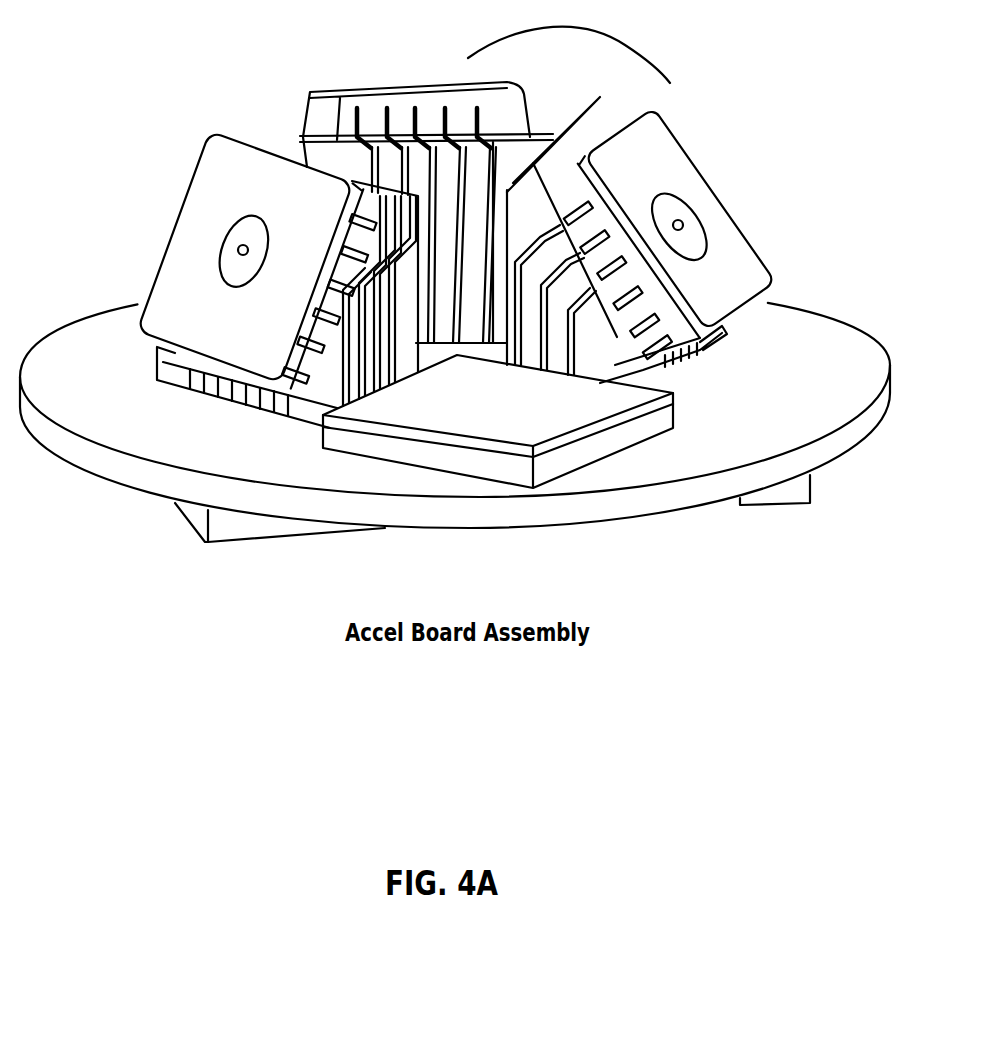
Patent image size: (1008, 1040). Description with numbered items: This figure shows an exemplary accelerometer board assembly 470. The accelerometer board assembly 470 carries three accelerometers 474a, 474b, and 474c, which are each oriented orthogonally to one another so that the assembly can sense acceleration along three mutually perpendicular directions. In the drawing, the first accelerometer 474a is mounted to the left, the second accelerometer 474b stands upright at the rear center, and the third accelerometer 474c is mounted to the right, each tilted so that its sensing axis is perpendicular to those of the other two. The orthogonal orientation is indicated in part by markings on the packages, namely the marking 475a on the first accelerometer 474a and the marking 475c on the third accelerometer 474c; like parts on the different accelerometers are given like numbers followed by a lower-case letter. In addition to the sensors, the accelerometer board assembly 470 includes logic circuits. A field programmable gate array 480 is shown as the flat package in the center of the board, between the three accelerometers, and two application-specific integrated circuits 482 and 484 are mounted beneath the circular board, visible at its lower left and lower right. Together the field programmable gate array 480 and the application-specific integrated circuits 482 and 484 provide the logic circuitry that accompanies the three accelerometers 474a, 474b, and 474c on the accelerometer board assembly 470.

The accelerometer board assembly 470 is at (455, 323).
The accelerometer 474a is at (196, 198).
The accelerometer 474b is at (400, 84).
The accelerometer 474c is at (700, 162).
The marking 475a is at (212, 262).
The marking 475c is at (707, 233).
The field programmable gate array 480 is at (507, 413).
The application-specific integrated circuit 482 is at (324, 537).
The application-specific integrated circuit 484 is at (767, 505).